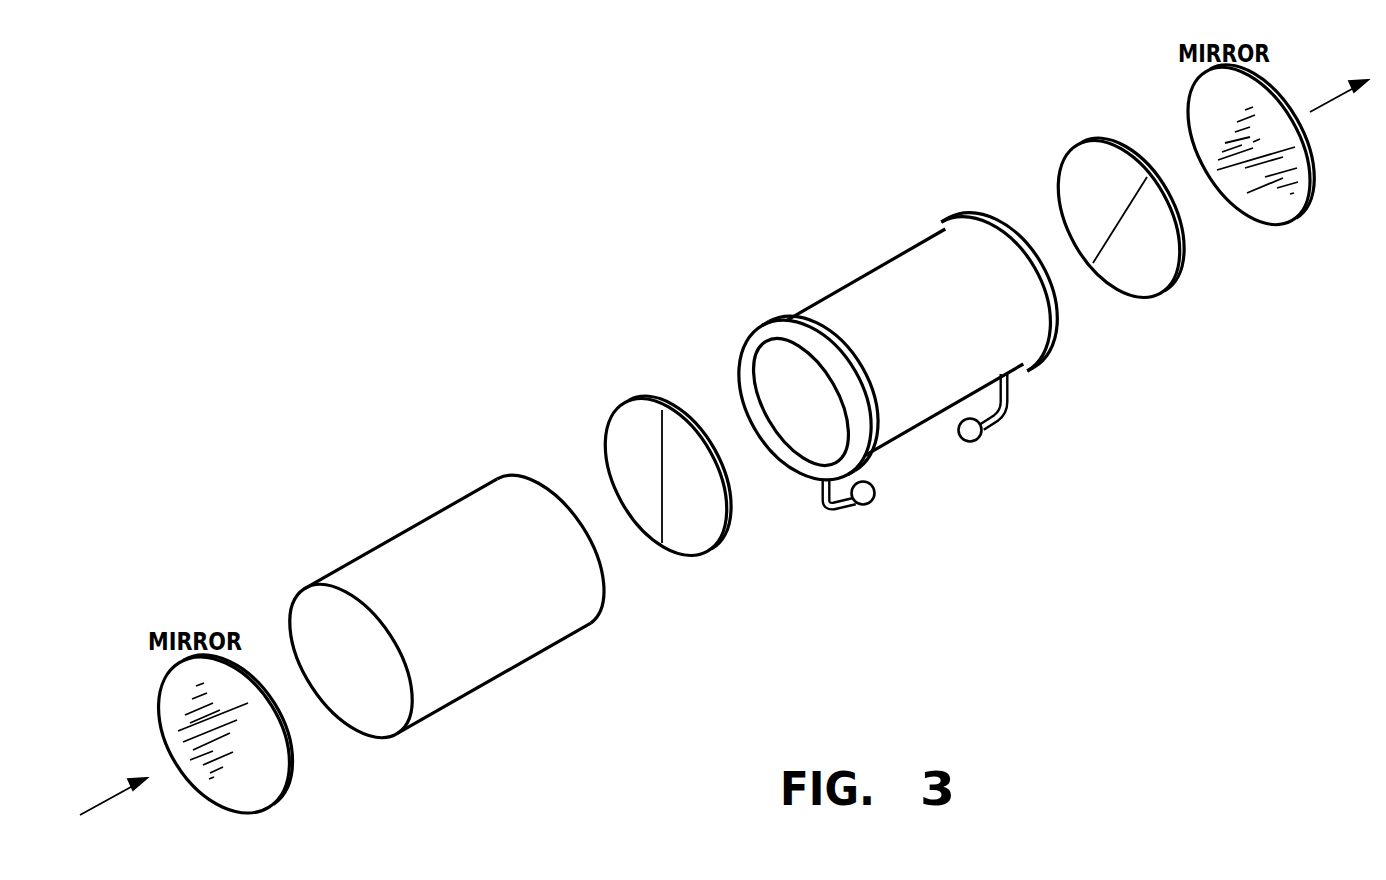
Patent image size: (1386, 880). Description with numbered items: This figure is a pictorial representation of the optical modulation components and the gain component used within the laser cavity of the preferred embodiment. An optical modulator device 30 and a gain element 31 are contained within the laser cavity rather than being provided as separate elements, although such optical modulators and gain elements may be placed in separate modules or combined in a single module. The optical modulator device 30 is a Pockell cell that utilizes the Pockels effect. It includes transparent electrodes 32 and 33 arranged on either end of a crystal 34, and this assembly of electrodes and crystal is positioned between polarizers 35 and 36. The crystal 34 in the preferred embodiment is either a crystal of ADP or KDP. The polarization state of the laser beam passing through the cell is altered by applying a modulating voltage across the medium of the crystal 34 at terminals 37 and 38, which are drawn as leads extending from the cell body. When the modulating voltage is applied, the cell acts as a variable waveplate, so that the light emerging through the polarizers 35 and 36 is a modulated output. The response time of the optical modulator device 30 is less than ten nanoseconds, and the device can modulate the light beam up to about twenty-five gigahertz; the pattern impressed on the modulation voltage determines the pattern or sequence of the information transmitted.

The optical modulator device 30 is at (937, 389).
The gain element 31 is at (417, 537).
The transparent electrode 32 is at (764, 392).
The transparent electrode 33 is at (953, 217).
The crystal 34 is at (860, 287).
The polarizer 35 is at (633, 402).
The polarizer 36 is at (1073, 152).
The terminal 37 is at (875, 490).
The terminal 38 is at (983, 433).